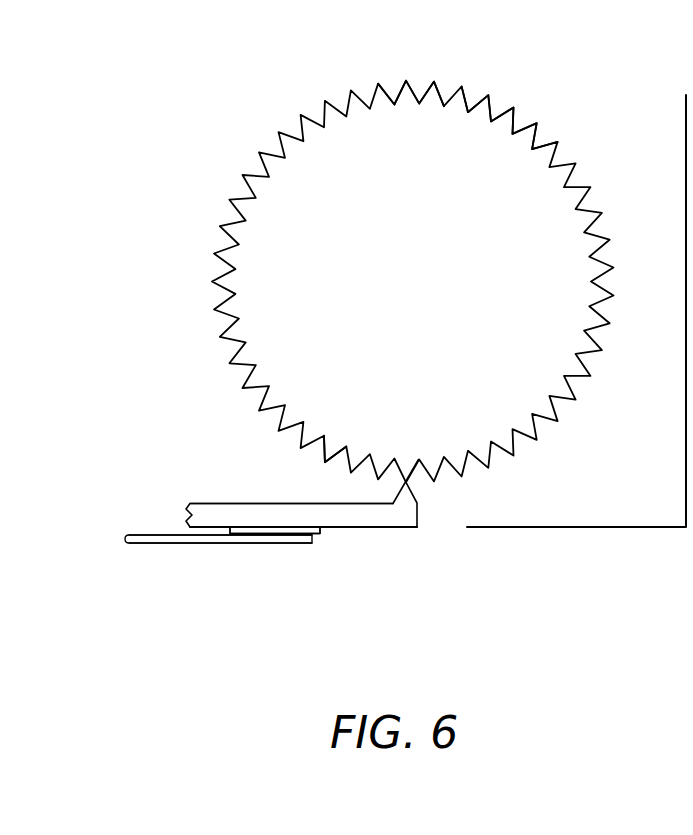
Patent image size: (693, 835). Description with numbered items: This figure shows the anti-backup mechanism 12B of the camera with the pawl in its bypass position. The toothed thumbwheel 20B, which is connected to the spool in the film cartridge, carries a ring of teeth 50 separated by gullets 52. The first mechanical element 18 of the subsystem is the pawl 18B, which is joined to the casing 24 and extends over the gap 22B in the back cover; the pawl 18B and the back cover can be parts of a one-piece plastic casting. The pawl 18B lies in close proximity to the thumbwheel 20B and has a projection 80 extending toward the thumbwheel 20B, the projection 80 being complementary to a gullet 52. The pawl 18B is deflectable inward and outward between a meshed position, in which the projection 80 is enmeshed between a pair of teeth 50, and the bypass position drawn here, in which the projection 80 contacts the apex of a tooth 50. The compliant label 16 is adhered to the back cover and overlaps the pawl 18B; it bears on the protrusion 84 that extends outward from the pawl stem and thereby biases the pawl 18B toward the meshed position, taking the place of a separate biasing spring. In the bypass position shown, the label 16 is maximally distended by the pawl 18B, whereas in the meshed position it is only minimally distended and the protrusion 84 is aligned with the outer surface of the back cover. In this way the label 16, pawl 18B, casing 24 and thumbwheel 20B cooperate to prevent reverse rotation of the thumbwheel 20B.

The thumbwheel 20B is at (436, 285).
The tooth 50 is at (530, 124).
The gullet 52 is at (422, 80).
The casing 24 is at (688, 437).
The projection 80 is at (425, 483).
The mechanical element 18 is at (397, 528).
The pawl 18B is at (303, 516).
The protrusion 84 is at (325, 533).
The compliant label 16 is at (143, 543).
The gap 22B is at (308, 572).
The mechanism 12B is at (232, 597).